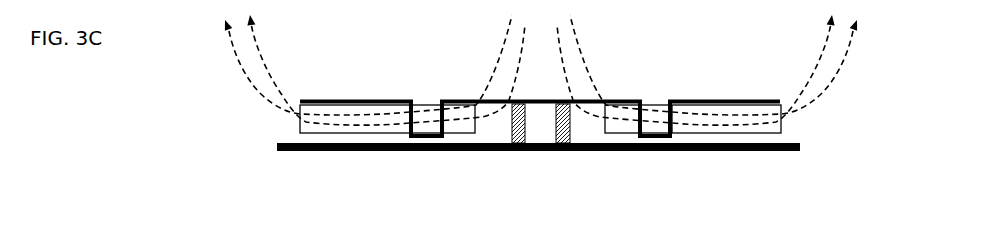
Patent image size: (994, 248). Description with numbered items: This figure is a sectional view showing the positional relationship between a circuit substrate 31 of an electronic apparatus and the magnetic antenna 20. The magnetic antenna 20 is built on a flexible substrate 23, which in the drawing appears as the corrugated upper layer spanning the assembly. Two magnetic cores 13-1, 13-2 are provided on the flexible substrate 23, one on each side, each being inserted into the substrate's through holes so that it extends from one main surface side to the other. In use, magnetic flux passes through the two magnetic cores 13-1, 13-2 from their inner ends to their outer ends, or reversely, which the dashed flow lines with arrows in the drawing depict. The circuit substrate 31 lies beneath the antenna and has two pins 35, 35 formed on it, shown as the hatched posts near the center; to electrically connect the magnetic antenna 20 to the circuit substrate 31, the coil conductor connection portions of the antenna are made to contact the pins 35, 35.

The magnetic antenna 20 is at (845, 107).
The magnetic core 13-1 is at (300, 126).
The magnetic core 13-2 is at (781, 126).
The flexible substrate 23 is at (533, 100).
The circuit substrate 31 is at (540, 151).
The pin 35 is at (512, 132).